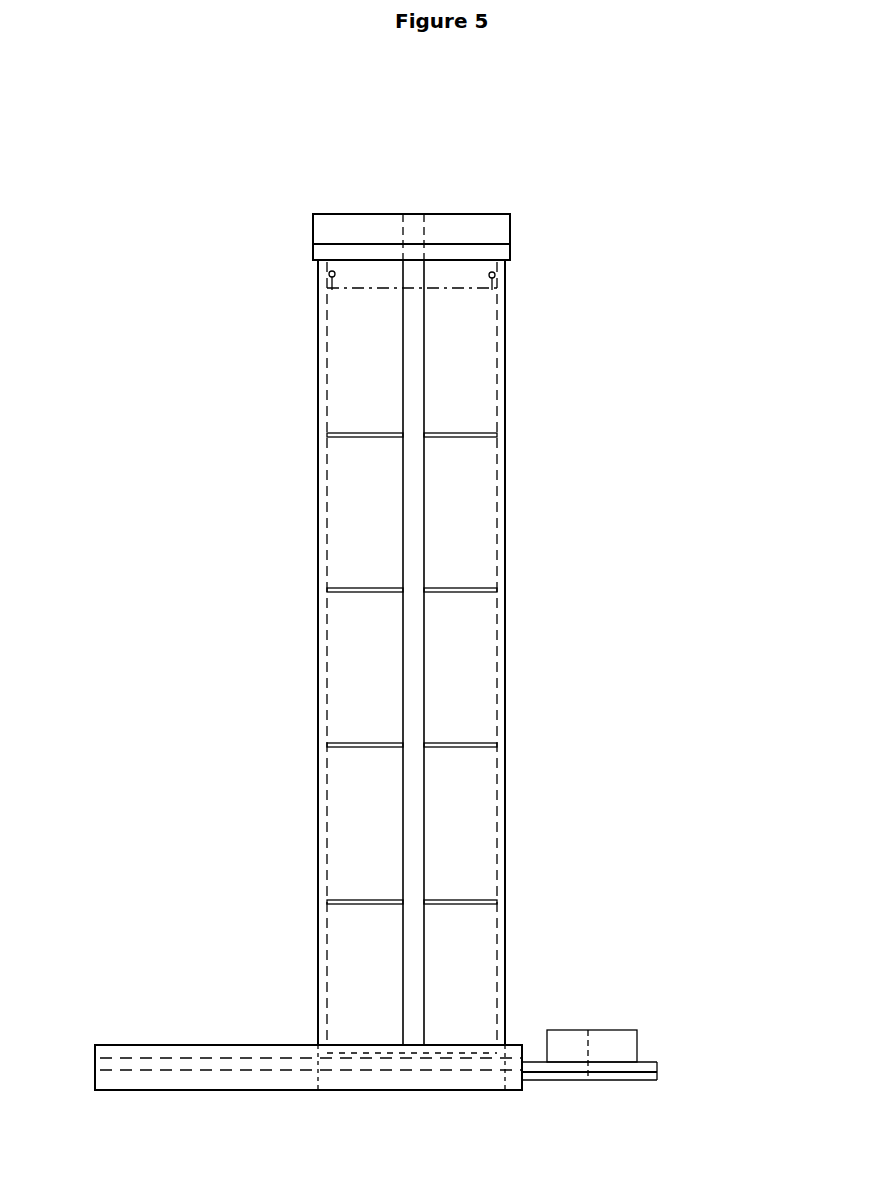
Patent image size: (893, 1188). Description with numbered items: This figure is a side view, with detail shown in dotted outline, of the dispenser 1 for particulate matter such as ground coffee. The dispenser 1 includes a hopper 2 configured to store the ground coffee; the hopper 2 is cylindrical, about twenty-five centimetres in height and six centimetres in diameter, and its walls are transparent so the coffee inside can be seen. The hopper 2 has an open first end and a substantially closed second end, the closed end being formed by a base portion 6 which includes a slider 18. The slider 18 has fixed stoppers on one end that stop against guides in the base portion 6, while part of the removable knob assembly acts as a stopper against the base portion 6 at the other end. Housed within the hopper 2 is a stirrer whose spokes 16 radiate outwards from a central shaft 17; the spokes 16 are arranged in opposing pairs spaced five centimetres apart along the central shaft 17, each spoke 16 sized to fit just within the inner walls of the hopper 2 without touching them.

The dispenser 1 is at (592, 216).
The hopper 2 is at (505, 508).
The base portion 6 is at (130, 1062).
The spokes 16 is at (330, 590).
The central shaft 17 is at (412, 335).
The slider 18 is at (635, 1082).